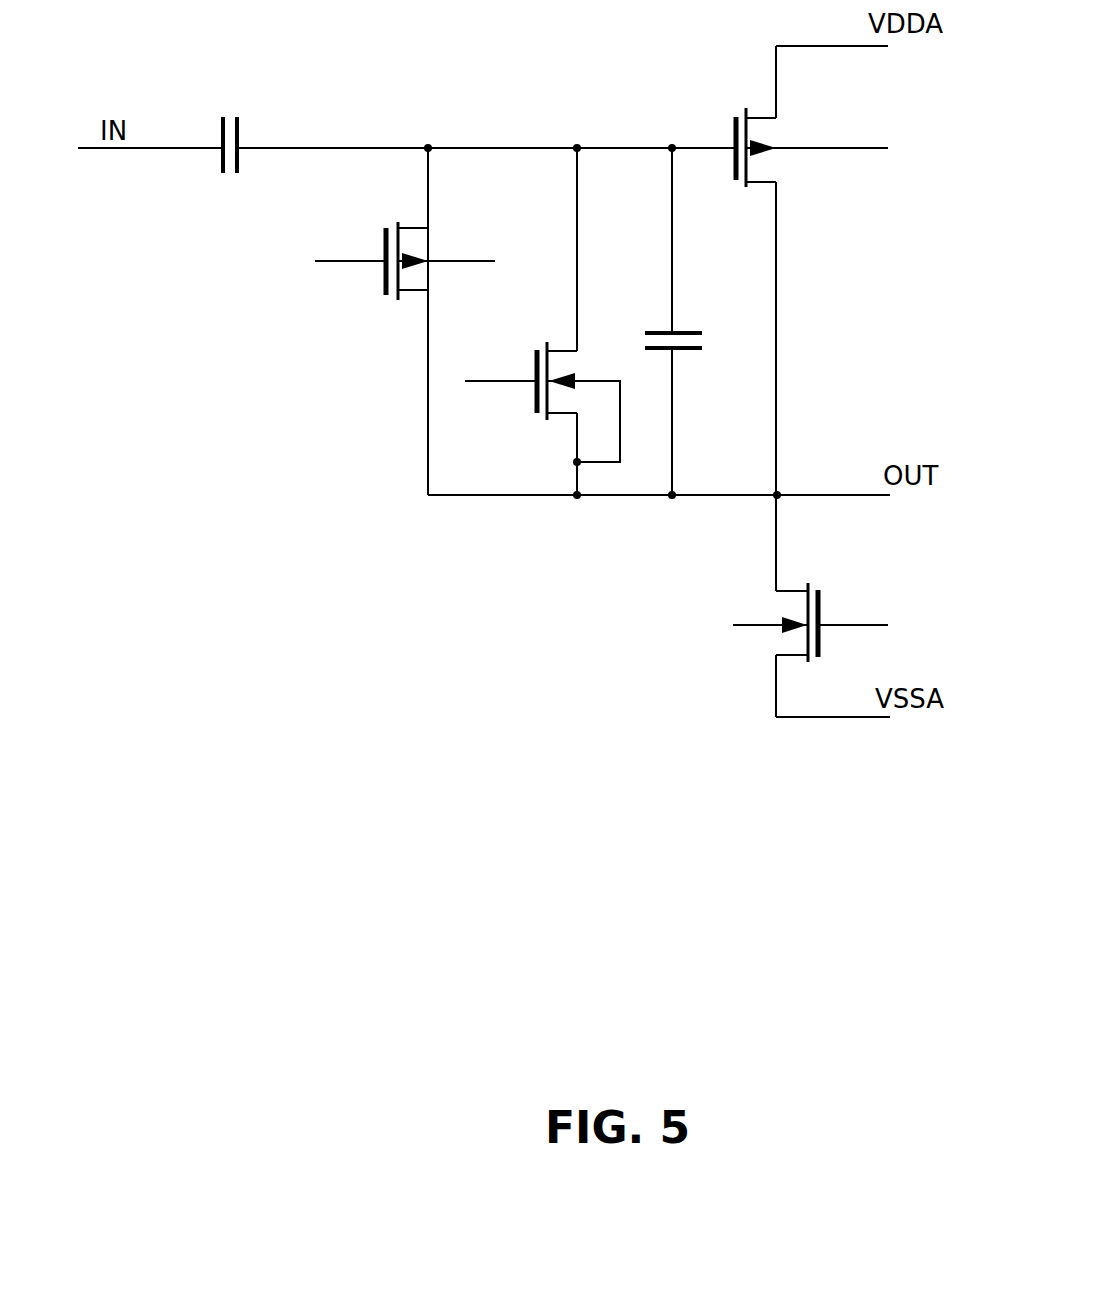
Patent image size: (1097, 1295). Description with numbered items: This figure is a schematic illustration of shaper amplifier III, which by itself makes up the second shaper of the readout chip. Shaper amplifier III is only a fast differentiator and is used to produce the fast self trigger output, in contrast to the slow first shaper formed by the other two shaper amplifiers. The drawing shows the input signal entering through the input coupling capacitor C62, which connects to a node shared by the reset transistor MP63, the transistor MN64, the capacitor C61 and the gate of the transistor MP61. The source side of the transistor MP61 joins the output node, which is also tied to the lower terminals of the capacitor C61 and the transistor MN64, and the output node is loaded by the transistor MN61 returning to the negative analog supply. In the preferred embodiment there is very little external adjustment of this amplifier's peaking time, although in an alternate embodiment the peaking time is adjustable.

The input coupling capacitor (150f) C62 is at (237, 152).
The PMOS reset transistor MP63 is at (396, 278).
The NMOS transistor MN64 is at (536, 381).
The capacitor (25f) C61 is at (688, 342).
The PMOS transistor MP61 is at (819, 165).
The NMOS current source transistor MN61 is at (814, 611).